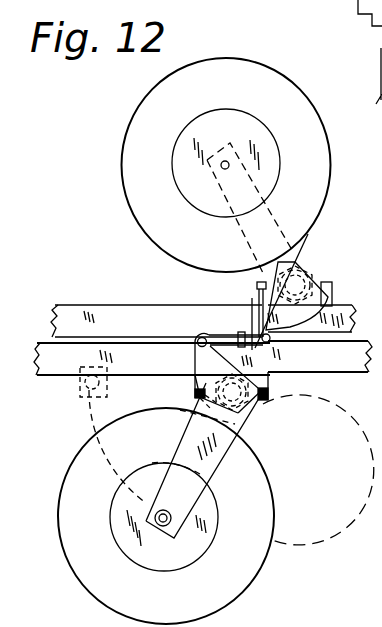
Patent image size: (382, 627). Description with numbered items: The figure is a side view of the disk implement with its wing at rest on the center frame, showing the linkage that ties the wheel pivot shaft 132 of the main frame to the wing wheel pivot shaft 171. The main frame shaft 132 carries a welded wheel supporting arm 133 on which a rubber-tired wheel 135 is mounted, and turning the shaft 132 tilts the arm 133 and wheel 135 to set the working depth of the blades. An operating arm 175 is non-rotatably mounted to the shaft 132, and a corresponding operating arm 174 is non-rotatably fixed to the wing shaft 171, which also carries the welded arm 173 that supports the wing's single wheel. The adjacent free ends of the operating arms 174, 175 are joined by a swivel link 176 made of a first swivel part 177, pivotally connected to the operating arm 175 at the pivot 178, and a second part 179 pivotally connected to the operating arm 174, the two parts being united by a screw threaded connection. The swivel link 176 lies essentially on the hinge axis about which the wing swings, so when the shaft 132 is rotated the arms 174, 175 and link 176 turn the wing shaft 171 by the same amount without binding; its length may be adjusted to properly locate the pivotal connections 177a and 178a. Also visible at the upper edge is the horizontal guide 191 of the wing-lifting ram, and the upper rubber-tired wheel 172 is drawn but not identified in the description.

The upper wheel 172 is at (143, 96).
The horizontal guide 191 is at (381, 33).
The first swivel part 177 is at (208, 334).
The operating arm 174 is at (333, 299).
The wing wheel pivot shaft 171 is at (310, 254).
The arm 173 is at (305, 243).
The second part / screw threaded connection 179 is at (252, 300).
The swivel link 176 is at (224, 328).
The pivotal connection 177a is at (194, 346).
The operating arm 175 is at (180, 374).
The pivotal connection 178a is at (271, 342).
The pivotal connection 178 is at (266, 374).
The wheel pivot shaft 132 is at (250, 421).
The wheel supporting arm 133 is at (222, 460).
The rubber-tired wheel 135 is at (258, 581).